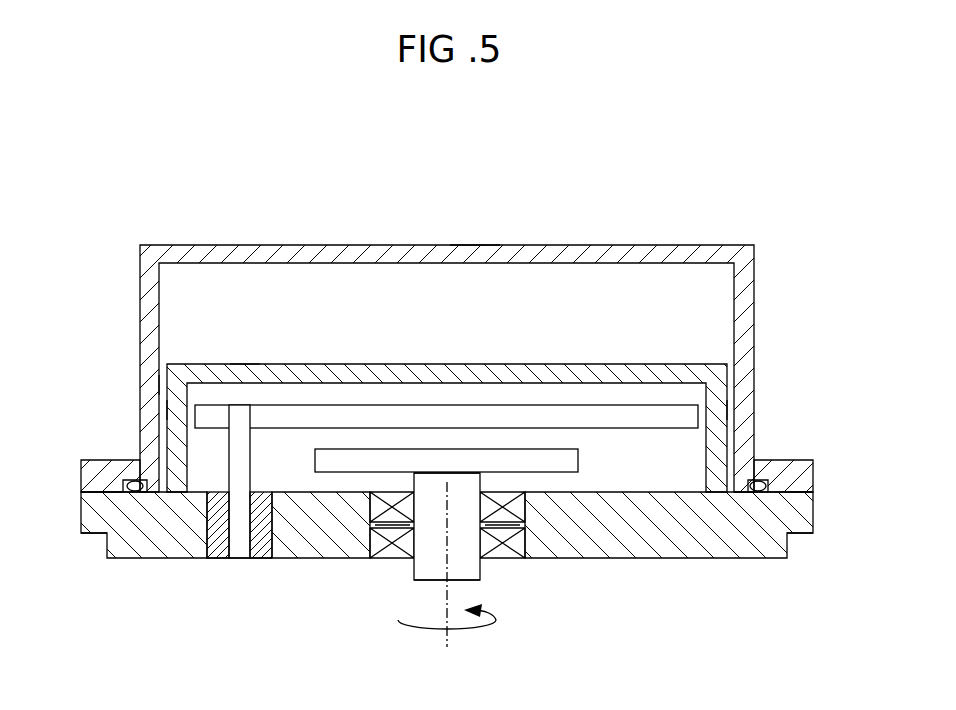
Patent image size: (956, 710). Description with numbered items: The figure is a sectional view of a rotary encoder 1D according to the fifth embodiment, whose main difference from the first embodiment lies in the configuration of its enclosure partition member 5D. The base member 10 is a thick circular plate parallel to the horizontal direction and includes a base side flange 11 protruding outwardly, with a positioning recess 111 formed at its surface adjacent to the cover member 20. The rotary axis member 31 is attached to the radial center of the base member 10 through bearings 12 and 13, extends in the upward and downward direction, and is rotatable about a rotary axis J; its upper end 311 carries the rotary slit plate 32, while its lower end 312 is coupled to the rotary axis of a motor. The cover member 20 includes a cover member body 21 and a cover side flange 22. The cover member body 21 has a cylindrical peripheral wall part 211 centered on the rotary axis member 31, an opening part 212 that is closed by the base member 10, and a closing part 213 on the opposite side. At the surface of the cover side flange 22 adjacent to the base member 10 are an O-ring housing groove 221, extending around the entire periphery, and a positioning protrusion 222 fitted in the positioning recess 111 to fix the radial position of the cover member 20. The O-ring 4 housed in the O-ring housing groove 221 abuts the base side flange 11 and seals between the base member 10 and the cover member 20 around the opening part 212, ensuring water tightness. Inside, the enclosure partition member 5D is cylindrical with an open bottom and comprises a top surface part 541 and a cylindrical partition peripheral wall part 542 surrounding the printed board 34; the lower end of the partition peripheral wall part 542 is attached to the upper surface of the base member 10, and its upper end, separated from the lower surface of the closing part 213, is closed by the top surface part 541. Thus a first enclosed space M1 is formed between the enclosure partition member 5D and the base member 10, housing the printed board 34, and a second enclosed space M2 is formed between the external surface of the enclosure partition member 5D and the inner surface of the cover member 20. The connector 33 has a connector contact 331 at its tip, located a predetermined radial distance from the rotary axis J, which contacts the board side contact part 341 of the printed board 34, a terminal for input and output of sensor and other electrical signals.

The rotary encoder 1D is at (775, 185).
The base member 10 is at (765, 575).
The base side flange 11 is at (90, 517).
The positioning recess 111 is at (103, 490).
The bearing 12 is at (368, 512).
The bearing 13 is at (368, 547).
The cover member 20 is at (64, 383).
The cover member body 21 is at (137, 385).
The peripheral wall part 211 is at (157, 387).
The opening part 212 is at (732, 492).
The closing part 213 is at (470, 245).
The cover side flange 22 is at (113, 458).
The O-ring housing groove 221 is at (123, 491).
The positioning protrusion 222 is at (110, 543).
The rotary axis member 31 is at (415, 565).
The upper end 311 is at (462, 472).
The lower end 312 is at (425, 580).
The rotary slit plate 32 is at (580, 467).
The connector 33 is at (215, 540).
The connector contact 331 is at (252, 418).
The printed board 34 is at (646, 428).
The board side contact part 341 is at (245, 417).
The O-ring 4 is at (138, 493).
The enclosure partition member 5D is at (345, 352).
The top surface part 541 is at (240, 364).
The partition peripheral wall part 542 is at (163, 400).
The first enclosed space M1 is at (610, 395).
The second enclosed space M2 is at (572, 300).
The rotary axis J is at (450, 642).